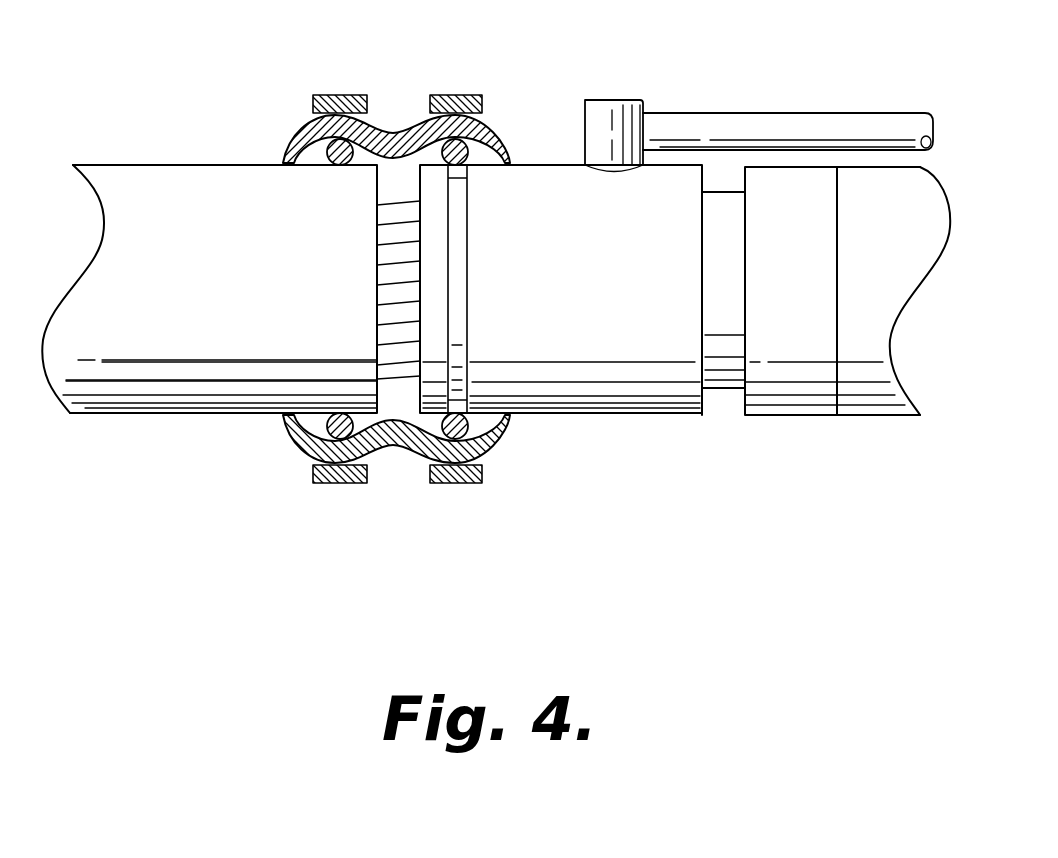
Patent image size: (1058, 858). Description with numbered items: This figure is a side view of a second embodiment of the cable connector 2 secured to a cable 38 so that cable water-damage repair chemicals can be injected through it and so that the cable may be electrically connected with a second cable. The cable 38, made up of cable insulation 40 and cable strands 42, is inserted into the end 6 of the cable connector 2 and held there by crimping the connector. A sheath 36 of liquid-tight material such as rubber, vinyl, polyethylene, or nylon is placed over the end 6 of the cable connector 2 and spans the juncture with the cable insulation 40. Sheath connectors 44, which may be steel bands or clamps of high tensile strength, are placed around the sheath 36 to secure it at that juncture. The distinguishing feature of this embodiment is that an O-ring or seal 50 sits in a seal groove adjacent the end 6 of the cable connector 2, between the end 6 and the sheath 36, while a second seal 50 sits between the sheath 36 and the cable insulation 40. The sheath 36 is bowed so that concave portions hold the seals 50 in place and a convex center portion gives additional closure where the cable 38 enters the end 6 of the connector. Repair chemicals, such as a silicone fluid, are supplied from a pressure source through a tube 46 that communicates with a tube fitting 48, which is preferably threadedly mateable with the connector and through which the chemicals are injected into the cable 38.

The cable connector 2 is at (651, 470).
The end of the cable connector 6 is at (418, 395).
The sheath 36 is at (418, 127).
The cable 38 is at (150, 155).
The cable insulation 40 is at (142, 347).
The cable strands 42 is at (398, 317).
The sheath connectors 44 is at (336, 95).
The tube 46 is at (813, 123).
The tube fitting 48 is at (598, 100).
The seal 50 is at (336, 145).